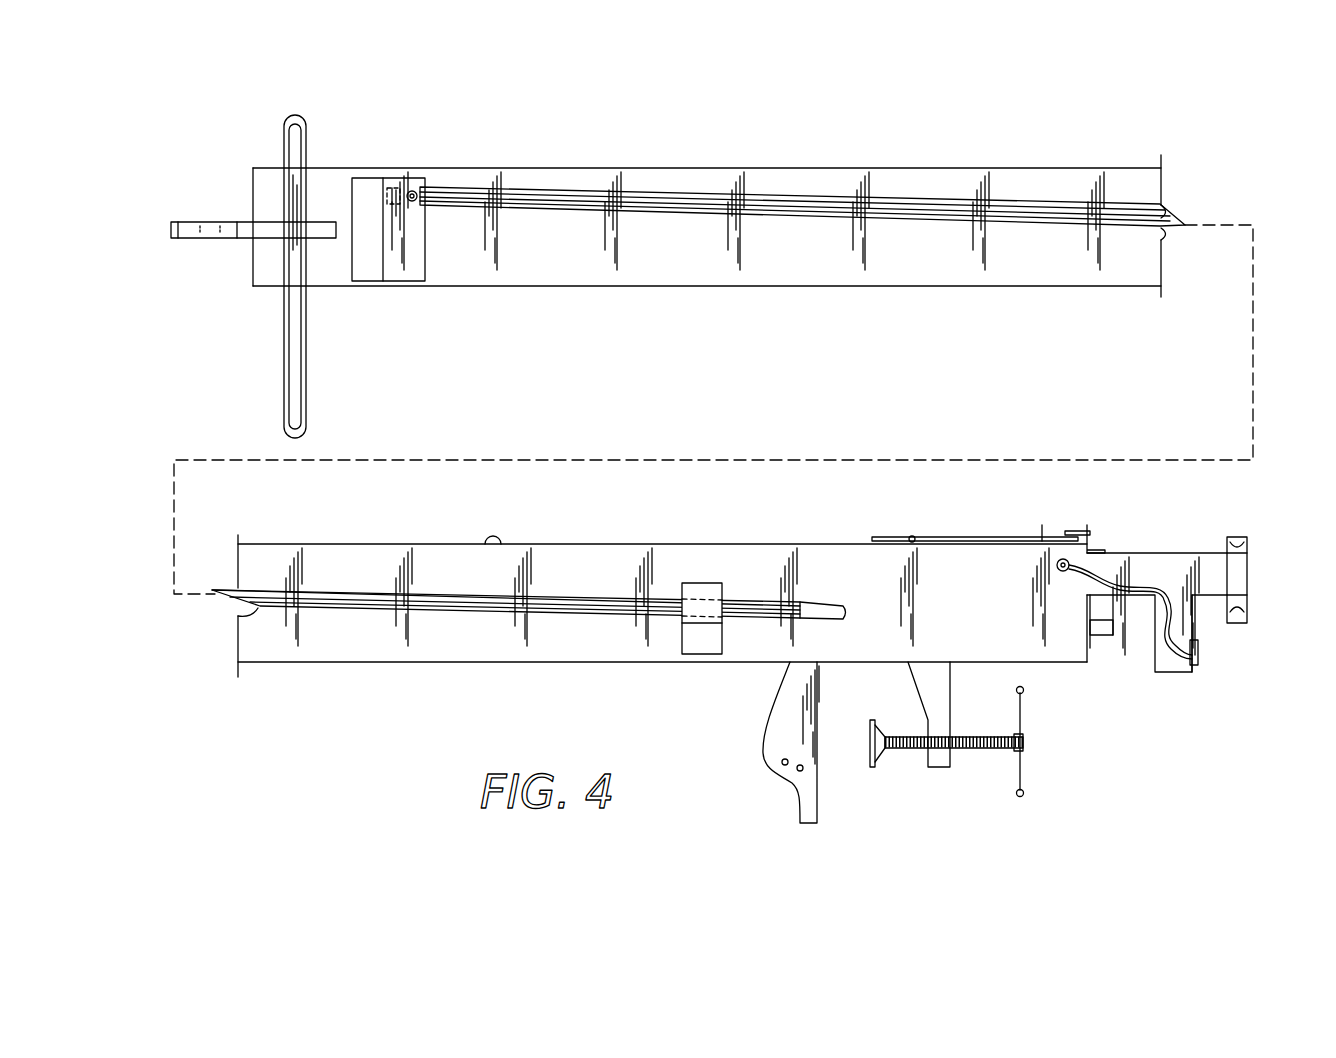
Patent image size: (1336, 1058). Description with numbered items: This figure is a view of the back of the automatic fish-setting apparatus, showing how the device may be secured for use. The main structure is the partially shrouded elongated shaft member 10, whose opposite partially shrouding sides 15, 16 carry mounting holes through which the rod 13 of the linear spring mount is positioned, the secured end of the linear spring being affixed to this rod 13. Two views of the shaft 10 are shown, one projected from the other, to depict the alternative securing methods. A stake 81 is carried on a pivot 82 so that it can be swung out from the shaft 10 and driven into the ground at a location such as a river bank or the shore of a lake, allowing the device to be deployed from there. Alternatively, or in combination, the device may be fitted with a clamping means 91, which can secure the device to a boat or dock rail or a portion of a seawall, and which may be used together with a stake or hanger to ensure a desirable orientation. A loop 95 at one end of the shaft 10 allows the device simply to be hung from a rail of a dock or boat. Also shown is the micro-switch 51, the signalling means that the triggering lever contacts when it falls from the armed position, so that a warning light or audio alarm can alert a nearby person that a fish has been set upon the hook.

The partially shrouded elongated shaft member 10 is at (807, 153).
The rod 13 is at (306, 143).
The partially shrouding side 15 is at (1005, 168).
The partially shrouding side 16 is at (1035, 286).
The micro-switch 51 is at (1198, 655).
The stake 81 is at (775, 207).
The pivot 82 is at (418, 192).
The clamping means 91 is at (820, 863).
The loop 95 is at (199, 222).